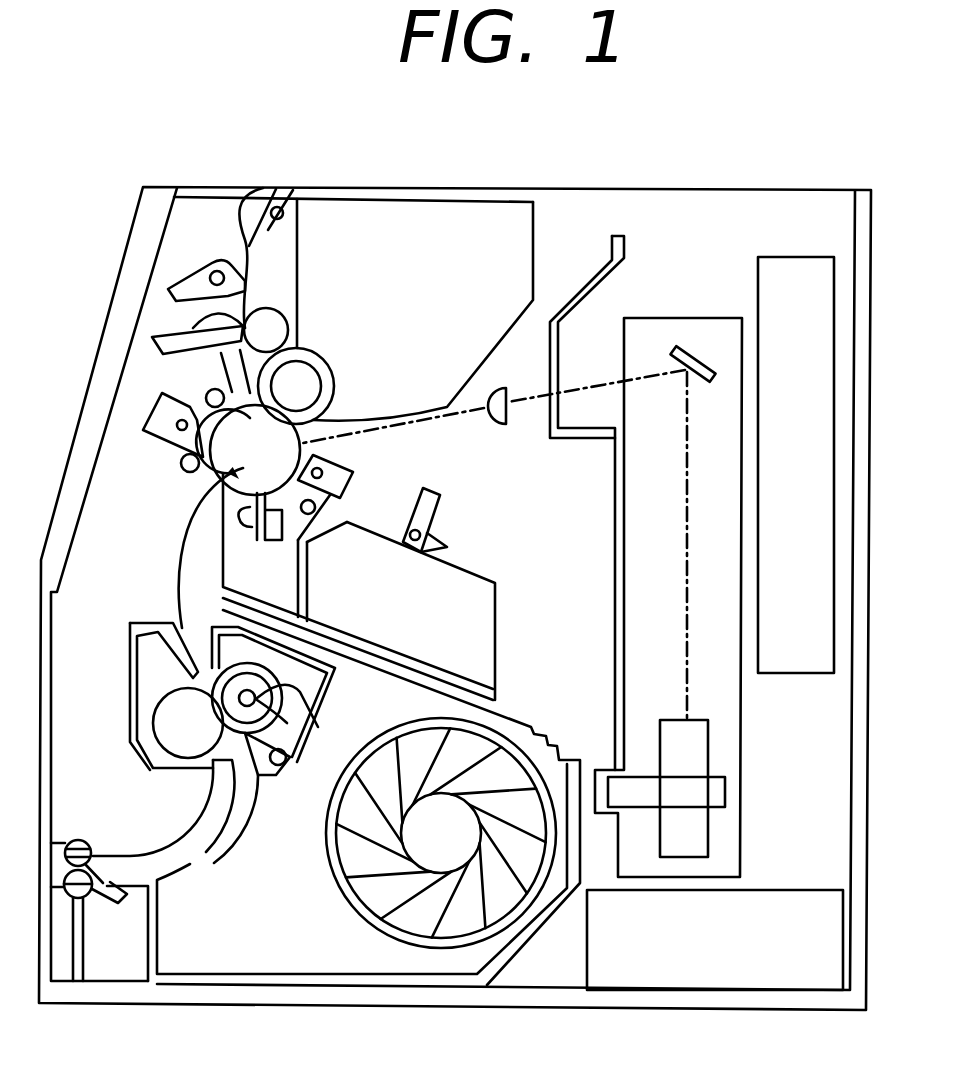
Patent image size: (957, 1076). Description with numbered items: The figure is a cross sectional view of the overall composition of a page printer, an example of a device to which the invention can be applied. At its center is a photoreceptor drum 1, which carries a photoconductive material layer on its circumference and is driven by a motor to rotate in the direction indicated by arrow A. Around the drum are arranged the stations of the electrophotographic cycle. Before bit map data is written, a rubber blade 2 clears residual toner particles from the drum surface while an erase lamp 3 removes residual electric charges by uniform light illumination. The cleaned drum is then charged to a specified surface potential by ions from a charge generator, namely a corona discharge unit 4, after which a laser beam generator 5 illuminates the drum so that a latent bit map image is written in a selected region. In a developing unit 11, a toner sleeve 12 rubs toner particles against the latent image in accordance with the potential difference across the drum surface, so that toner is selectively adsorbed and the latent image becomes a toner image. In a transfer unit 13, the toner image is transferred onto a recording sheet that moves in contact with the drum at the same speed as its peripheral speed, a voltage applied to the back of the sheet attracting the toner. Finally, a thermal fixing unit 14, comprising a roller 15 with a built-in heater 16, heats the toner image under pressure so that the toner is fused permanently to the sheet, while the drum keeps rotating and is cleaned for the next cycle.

The photoreceptor drum 1 is at (196, 478).
The rubber blade 2 is at (240, 527).
The erase lamp 3 is at (328, 512).
The corona discharge unit 4 is at (350, 458).
The laser beam generator 5 is at (693, 318).
The developing unit 11 is at (532, 236).
The toner sleeve 12 is at (293, 387).
The transfer unit 13 is at (163, 413).
The thermal fixing unit 14 is at (119, 709).
The roller 15 is at (316, 703).
The built-in heater 16 is at (306, 729).